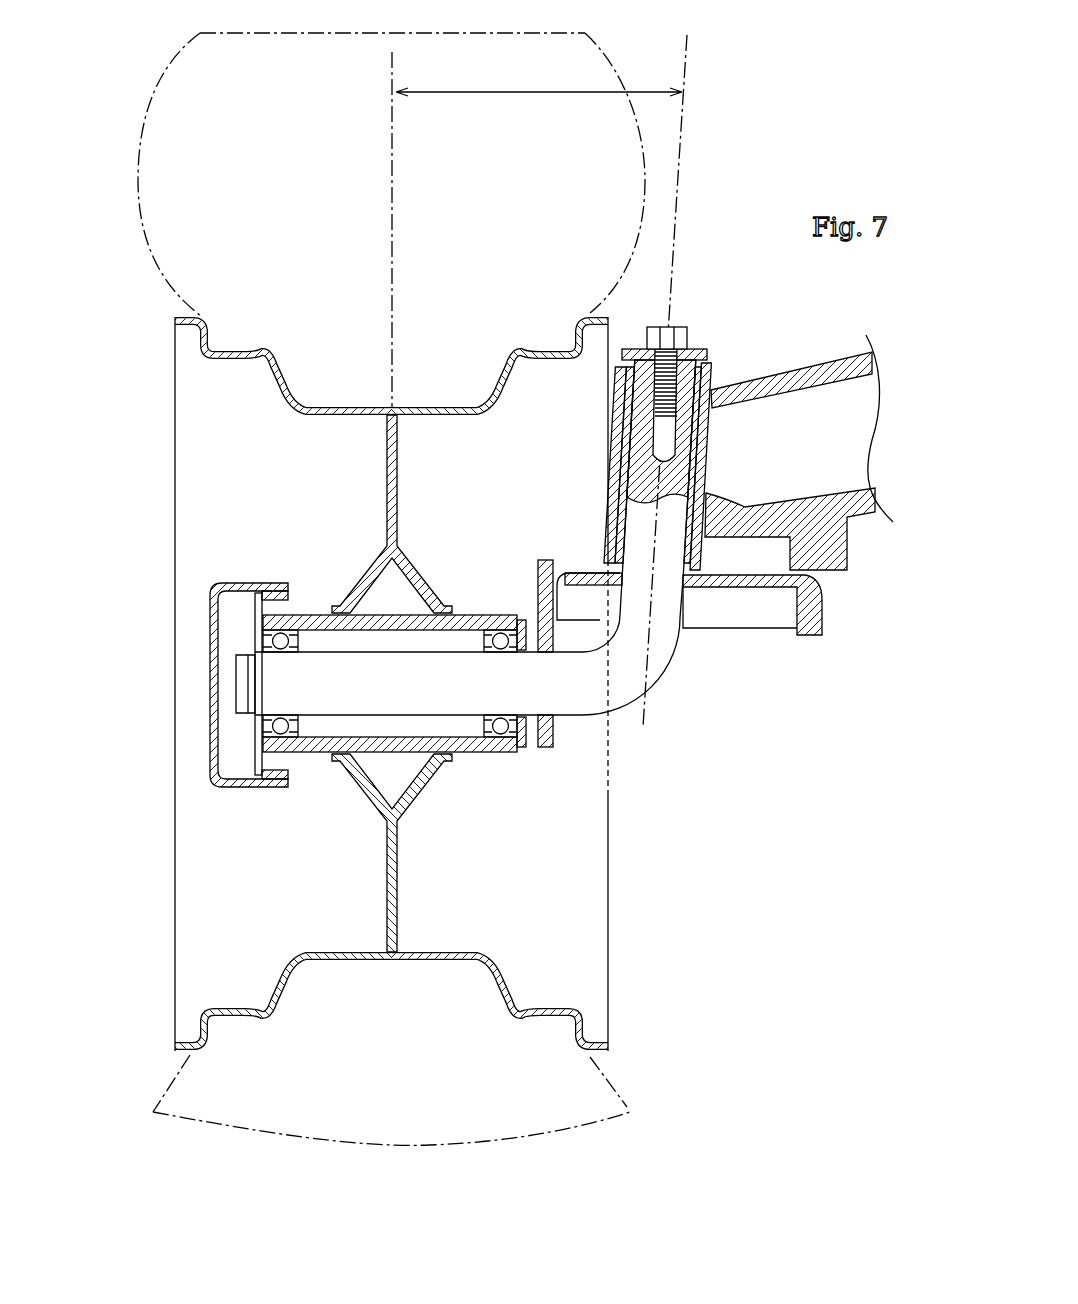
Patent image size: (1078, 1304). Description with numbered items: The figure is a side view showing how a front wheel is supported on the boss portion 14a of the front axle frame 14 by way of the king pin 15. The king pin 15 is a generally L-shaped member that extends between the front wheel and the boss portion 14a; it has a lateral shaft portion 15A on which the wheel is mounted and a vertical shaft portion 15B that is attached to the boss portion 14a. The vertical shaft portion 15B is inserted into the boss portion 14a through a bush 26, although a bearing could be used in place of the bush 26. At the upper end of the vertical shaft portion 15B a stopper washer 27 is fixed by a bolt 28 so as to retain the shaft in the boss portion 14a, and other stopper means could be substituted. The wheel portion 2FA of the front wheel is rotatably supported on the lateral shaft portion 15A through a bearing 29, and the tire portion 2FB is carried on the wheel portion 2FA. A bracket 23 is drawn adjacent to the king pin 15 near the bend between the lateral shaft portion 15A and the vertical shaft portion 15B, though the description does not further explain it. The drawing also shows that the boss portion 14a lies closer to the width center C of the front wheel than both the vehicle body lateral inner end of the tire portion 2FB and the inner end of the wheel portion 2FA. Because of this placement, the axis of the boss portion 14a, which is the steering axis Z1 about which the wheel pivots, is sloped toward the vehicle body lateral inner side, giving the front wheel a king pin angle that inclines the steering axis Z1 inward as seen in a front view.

The wheel portion 2FA is at (596, 902).
The tire portion 2FB is at (630, 1110).
The front axle frame 14 is at (778, 372).
The boss portion 14a is at (612, 432).
The king pin 15 is at (675, 671).
The lateral shaft portion 15A is at (462, 707).
The vertical shaft portion 15B is at (630, 492).
The bracket 23 is at (822, 617).
The bush 26 is at (612, 393).
The stopper washer 27 is at (700, 357).
The bolt 28 is at (683, 333).
The bearing 29 is at (281, 636).
The width center C is at (392, 205).
The steering axis Z1 is at (683, 145).